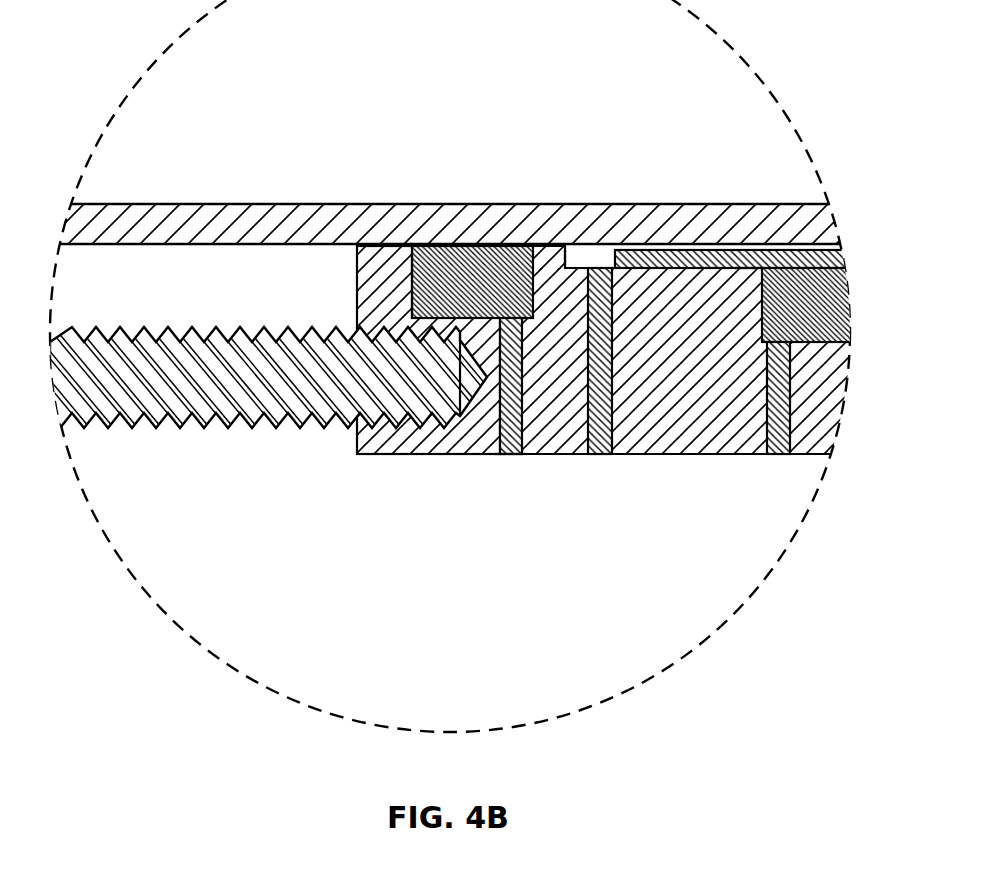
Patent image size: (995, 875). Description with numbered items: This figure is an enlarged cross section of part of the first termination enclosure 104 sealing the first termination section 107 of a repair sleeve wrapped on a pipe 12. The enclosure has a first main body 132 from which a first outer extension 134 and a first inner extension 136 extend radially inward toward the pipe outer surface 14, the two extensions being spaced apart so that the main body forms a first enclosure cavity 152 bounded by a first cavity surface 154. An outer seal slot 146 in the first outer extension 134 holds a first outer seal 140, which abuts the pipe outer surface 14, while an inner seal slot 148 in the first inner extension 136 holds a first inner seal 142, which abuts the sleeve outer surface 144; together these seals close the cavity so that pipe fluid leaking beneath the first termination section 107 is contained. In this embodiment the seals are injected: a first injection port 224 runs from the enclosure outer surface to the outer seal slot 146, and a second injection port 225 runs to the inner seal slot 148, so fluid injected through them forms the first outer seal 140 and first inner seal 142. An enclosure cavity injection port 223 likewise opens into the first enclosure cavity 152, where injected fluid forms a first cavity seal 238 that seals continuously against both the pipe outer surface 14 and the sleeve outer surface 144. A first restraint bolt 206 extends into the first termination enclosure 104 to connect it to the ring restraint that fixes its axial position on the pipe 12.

The pipe 12 is at (88, 224).
The pipe outer surface 14 is at (92, 246).
The first termination enclosure 104 is at (820, 460).
The first termination section 107 is at (717, 258).
The first main body 132 is at (637, 440).
The first outer extension 134 is at (360, 290).
The first inner extension 136 is at (747, 290).
The first outer seal 140 is at (512, 258).
The first inner seal 142 is at (792, 322).
The sleeve outer surface 144 is at (694, 262).
The outer seal slot 146 is at (408, 258).
The inner seal slot 148 is at (806, 346).
The first enclosure cavity 152 is at (581, 236).
The first cavity surface 154 is at (588, 268).
The first restraint bolt 206 is at (172, 430).
The enclosure cavity injection port 223 is at (598, 462).
The first injection port 224 is at (507, 462).
The second injection port 225 is at (778, 462).
The first cavity seal 238 is at (607, 256).